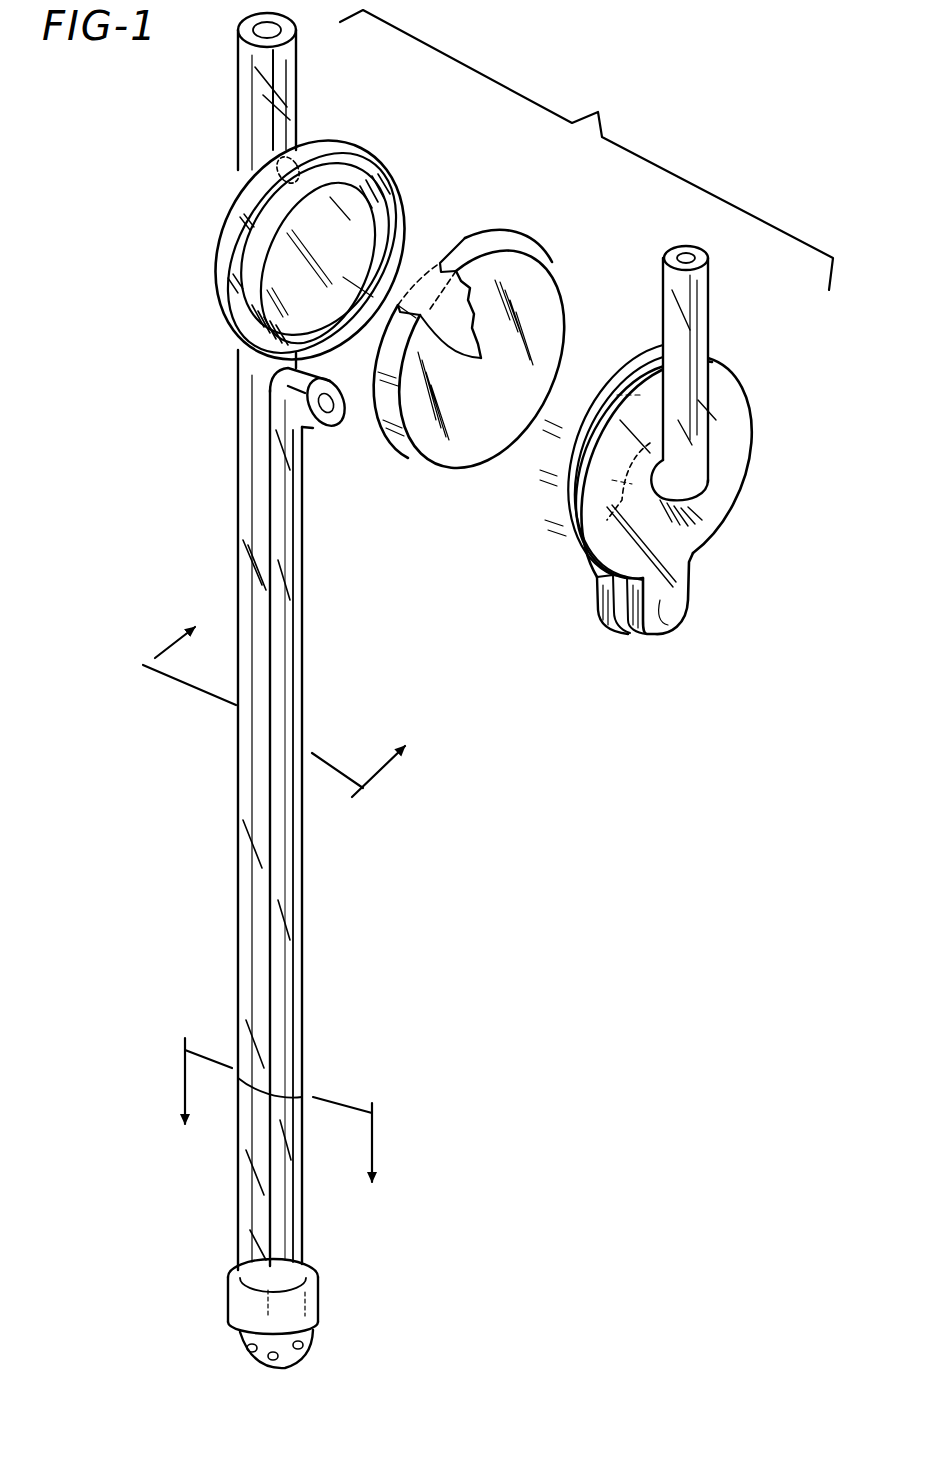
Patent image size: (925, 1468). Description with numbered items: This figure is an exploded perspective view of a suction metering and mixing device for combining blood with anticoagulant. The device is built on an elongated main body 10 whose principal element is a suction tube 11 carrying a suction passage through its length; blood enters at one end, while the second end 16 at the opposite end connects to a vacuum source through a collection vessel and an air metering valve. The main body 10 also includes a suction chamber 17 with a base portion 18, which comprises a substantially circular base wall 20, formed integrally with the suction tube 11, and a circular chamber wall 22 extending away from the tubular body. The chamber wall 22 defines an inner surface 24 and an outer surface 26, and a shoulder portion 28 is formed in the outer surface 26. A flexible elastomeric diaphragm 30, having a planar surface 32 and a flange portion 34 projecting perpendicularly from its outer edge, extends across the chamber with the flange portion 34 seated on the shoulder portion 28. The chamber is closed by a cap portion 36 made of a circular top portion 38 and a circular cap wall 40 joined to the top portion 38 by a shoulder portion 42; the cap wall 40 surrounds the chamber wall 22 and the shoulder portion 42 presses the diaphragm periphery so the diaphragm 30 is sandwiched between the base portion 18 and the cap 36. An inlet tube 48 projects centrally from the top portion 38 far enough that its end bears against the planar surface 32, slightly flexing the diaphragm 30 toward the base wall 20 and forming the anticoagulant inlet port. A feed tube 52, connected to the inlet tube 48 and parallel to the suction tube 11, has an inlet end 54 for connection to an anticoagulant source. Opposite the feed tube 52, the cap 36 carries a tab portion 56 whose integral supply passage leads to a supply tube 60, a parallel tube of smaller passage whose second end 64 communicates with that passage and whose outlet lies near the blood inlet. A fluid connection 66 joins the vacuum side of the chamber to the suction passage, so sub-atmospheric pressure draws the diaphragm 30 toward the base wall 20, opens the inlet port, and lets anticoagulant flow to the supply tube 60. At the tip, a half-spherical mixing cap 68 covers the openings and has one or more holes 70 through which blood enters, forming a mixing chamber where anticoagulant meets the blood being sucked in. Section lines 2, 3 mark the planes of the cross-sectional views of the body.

The main body 10 is at (232, 476).
The suction tube 11 is at (242, 557).
The second end 16 is at (240, 31).
The suction chamber 17 is at (586, 150).
The base portion 18 is at (412, 194).
The base wall 20 is at (395, 168).
The chamber wall 22 is at (229, 346).
The inner surface 24 is at (380, 245).
The outer surface 26 is at (255, 273).
The shoulder portion 28 is at (238, 308).
The diaphragm 30 is at (560, 267).
The planar surface 32 is at (549, 325).
The flange portion 34 is at (500, 246).
The cap portion 36 is at (754, 411).
The top portion 38 is at (725, 497).
The cap wall 40 is at (539, 477).
The shoulder portion 42 is at (562, 503).
The inlet tube 48 is at (556, 556).
The feed tube 52 is at (710, 324).
The inlet end 54 is at (710, 258).
The tab portion 56 is at (679, 633).
The supply tube 60 is at (303, 653).
The second end 64 is at (333, 428).
The fluid connection 66 is at (300, 158).
The mixing cap 68 is at (320, 1302).
The holes 70 is at (292, 1374).
The section line 2- 2 is at (285, 698).
The section line 3- 3 is at (277, 1124).